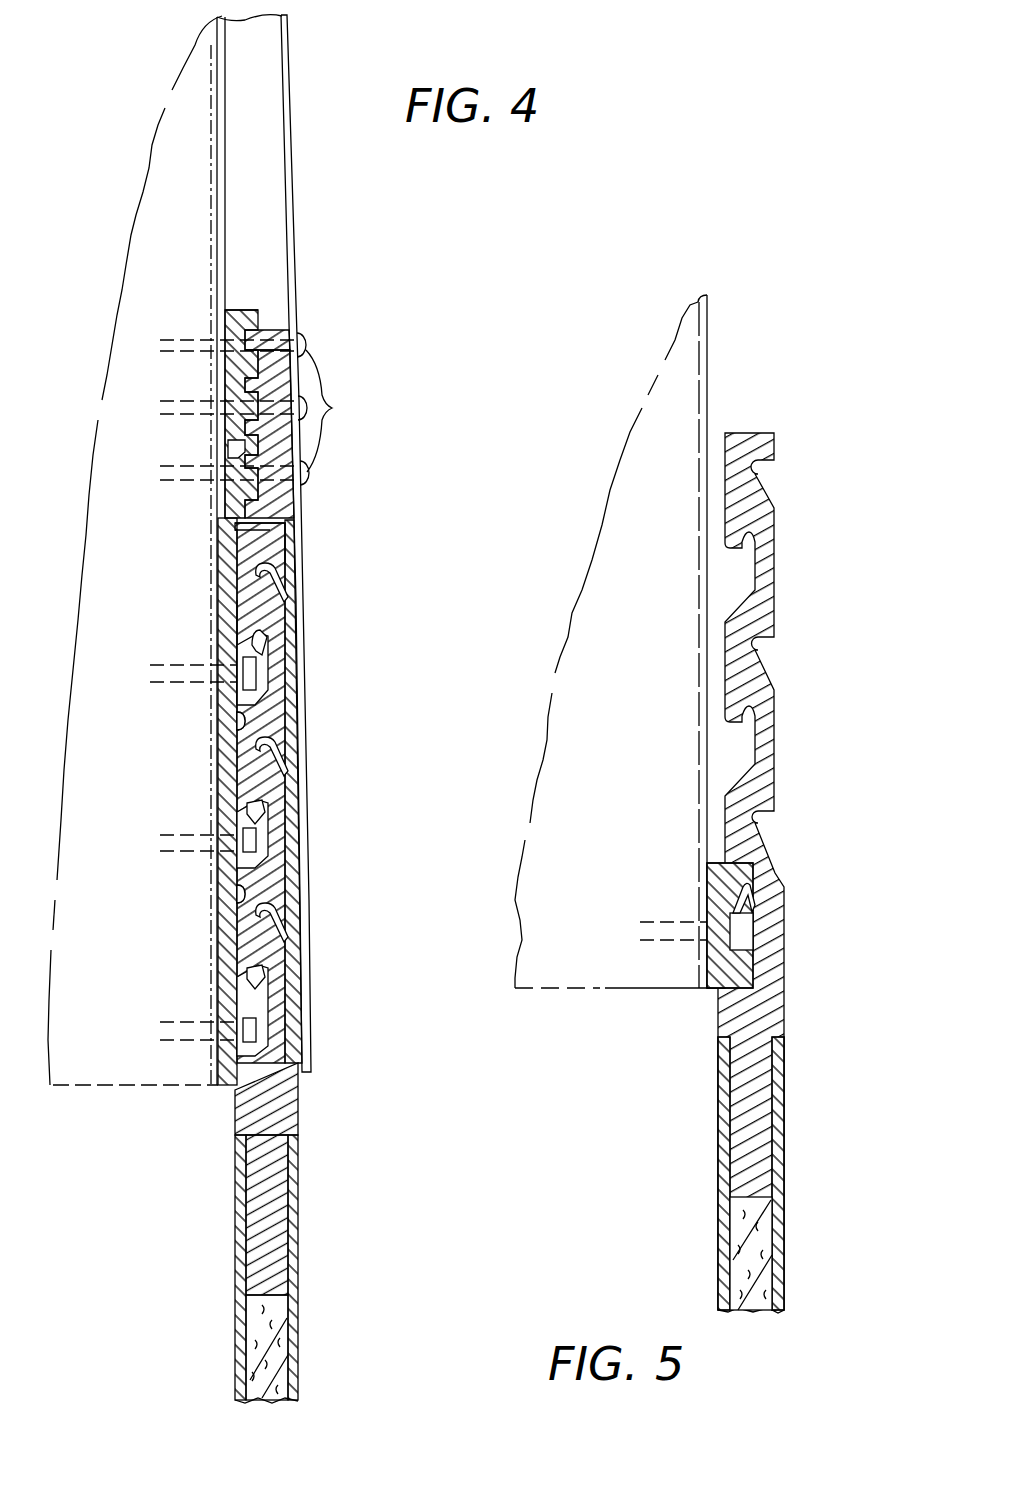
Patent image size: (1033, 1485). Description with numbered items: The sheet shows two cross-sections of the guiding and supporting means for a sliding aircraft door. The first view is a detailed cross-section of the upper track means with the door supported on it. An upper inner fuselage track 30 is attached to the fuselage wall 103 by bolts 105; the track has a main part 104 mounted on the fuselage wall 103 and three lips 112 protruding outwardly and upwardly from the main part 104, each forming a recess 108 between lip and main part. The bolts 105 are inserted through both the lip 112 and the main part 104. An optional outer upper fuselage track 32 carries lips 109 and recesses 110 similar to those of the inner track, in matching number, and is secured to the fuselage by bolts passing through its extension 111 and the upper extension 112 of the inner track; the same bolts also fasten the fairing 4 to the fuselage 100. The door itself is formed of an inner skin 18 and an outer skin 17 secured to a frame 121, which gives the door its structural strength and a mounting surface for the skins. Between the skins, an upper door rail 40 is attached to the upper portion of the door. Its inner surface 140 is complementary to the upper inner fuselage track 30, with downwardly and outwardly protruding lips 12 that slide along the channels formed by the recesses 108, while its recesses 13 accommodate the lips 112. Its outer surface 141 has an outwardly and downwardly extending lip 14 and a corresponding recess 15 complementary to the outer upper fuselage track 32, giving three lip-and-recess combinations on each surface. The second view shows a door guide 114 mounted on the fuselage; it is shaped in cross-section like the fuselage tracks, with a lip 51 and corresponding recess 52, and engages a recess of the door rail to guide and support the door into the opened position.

In FIG. 4, the fuselage 100 is at (247, 20).
In FIG. 4, the fairing 4 is at (290, 127).
In FIG. 4, the upper inner fuselage track 30 is at (240, 306).
In FIG. 4, the outer upper fuselage track 32 is at (272, 330).
In FIG. 4, the fuselage wall 103 is at (225, 318).
In FIG. 4, the bolts 105 is at (160, 1022).
In FIG. 4, the lip 112 is at (228, 450).
In FIG. 4, the extension 111 is at (300, 503).
In FIG. 4, the upper door rail 40 is at (296, 524).
In FIG. 4, the inner surface 140 is at (228, 580).
In FIG. 4, the outer surface 141 is at (291, 563).
In FIG. 4, the main part 104 is at (238, 642).
In FIG. 4, the lip 12 is at (266, 665).
In FIG. 4, the lip 14 is at (281, 730).
In FIG. 4, the lip 109 is at (264, 752).
In FIG. 4, the recess 108 is at (242, 808).
In FIG. 4, the recess 15 is at (250, 905).
In FIG. 4, the recess 110 is at (290, 912).
In FIG. 4, the recess 13 is at (245, 975).
In FIG. 4, the inner skin 18 is at (240, 1205).
In FIG. 4, the outer skin 17 is at (298, 1205).
In FIG. 4, the frame 121 is at (297, 1370).
In FIG. 5, the door guide 114 is at (707, 880).
In FIG. 5, the lip 51 is at (785, 872).
In FIG. 5, the recess 52 is at (760, 914).